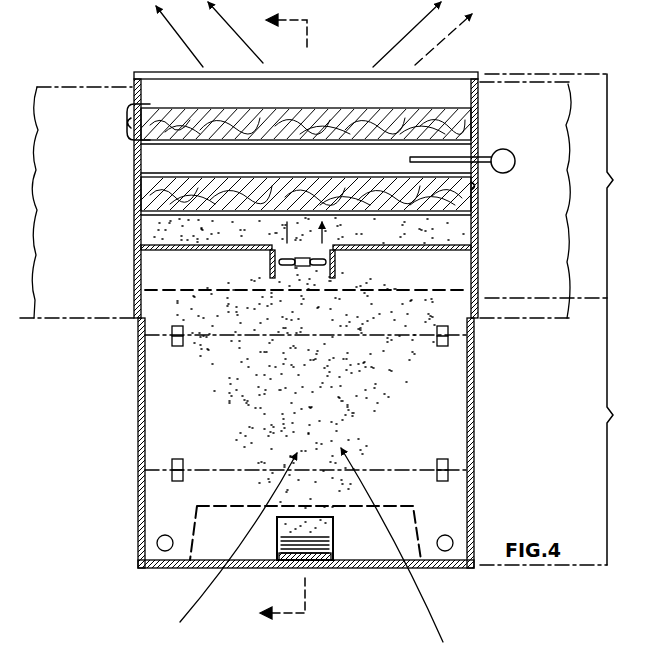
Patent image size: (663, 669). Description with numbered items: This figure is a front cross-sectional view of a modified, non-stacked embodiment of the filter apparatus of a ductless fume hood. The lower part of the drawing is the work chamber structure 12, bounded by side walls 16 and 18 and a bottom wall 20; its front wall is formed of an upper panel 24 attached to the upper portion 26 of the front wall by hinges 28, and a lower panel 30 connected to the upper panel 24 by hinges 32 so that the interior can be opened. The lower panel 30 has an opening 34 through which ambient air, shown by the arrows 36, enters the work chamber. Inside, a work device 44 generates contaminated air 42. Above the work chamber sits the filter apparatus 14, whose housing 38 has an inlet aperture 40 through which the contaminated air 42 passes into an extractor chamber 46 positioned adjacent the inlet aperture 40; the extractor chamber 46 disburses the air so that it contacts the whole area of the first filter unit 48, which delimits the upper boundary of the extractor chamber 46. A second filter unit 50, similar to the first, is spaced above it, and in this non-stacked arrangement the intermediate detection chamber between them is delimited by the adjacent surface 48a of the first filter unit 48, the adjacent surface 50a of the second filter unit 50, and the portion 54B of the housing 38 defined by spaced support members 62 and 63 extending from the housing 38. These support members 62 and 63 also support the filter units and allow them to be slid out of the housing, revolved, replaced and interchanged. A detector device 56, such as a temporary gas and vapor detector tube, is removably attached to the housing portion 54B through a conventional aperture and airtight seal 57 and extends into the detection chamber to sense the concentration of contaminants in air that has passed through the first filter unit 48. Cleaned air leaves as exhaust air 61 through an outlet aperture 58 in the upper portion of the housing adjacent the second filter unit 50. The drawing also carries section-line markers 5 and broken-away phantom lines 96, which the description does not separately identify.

The work chamber structure 12 is at (392, 433).
The filter apparatus 14 is at (390, 195).
The side wall 16 is at (138, 386).
The side wall 18 is at (474, 396).
The bottom wall 20 is at (418, 567).
The upper panel 24 is at (471, 448).
The upper portion of the front wall 26 is at (466, 320).
The hinges 28 is at (172, 333).
The lower panel 30 is at (472, 512).
The hinges 32 is at (172, 463).
The opening 34 is at (362, 556).
The arrows 36 is at (205, 598).
The housing 38 is at (481, 257).
The inlet aperture 40 is at (320, 245).
The contaminated air 42 is at (298, 389).
The work device 44 is at (340, 556).
The extractor chamber 46 is at (158, 228).
The first filter unit 48 is at (141, 198).
The adjacent surface of first filter unit 48a is at (291, 177).
The second filter unit 50 is at (476, 131).
The adjacent surface of second filter unit 50a is at (383, 144).
The portion of the housing 54B is at (145, 163).
The detector device 56 is at (515, 168).
The aperture and airtight seal 57 is at (479, 159).
The outlet aperture 58 is at (292, 88).
The exhaust air 61 is at (180, 49).
The support member 62 is at (477, 186).
The support member 63 is at (133, 112).
The cut line 96 is at (88, 90).
The section line 5- 5 is at (274, 317).